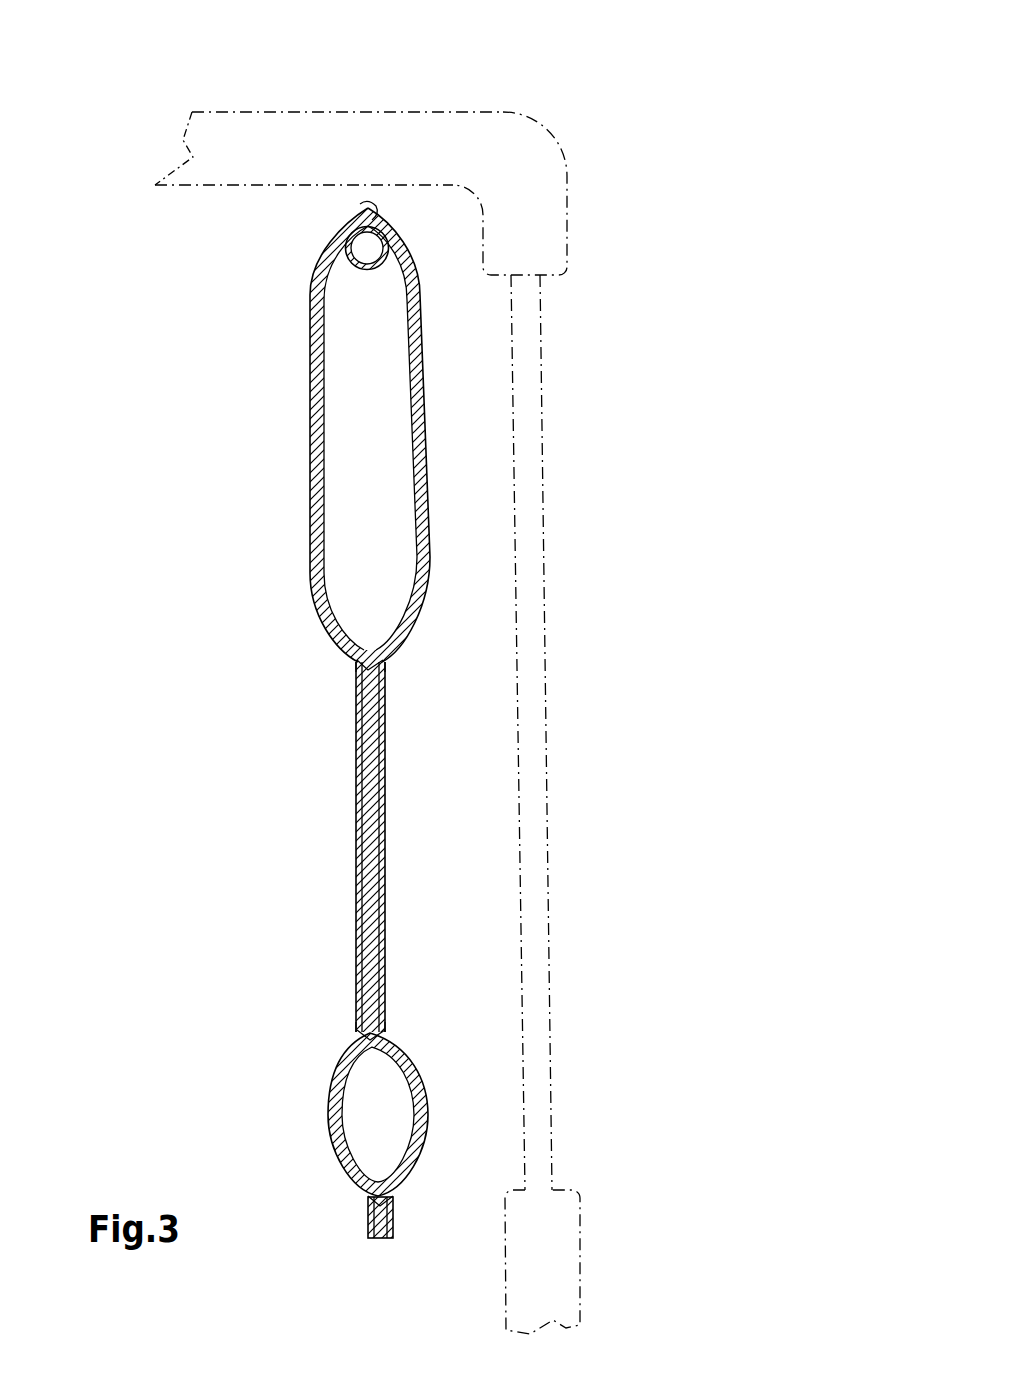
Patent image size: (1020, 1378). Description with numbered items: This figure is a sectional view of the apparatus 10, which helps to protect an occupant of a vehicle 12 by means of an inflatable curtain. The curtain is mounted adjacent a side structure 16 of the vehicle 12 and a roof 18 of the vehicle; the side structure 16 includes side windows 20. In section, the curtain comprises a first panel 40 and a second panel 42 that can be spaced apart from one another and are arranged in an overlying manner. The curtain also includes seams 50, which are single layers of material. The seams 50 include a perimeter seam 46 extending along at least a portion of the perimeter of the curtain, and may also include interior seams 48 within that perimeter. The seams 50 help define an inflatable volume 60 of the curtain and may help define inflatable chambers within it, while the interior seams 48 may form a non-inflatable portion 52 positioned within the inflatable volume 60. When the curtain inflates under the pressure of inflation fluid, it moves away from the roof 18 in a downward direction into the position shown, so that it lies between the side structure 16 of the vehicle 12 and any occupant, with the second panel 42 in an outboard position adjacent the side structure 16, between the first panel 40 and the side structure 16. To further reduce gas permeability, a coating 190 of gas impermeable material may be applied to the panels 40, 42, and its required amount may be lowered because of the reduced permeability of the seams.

The apparatus 10 is at (180, 268).
The vehicle 12 is at (560, 72).
The side structure 16 is at (537, 220).
The roof 18 is at (243, 128).
The side windows 20 is at (530, 722).
The first panel 40 is at (310, 420).
The second panel 42 is at (428, 467).
The perimeter seam 46 is at (380, 1228).
The interior seams 48 is at (357, 657).
The seams 50 is at (360, 210).
The non-inflatable portion 52 is at (363, 773).
The inflatable volume 60 is at (367, 540).
The coating 190 is at (310, 346).